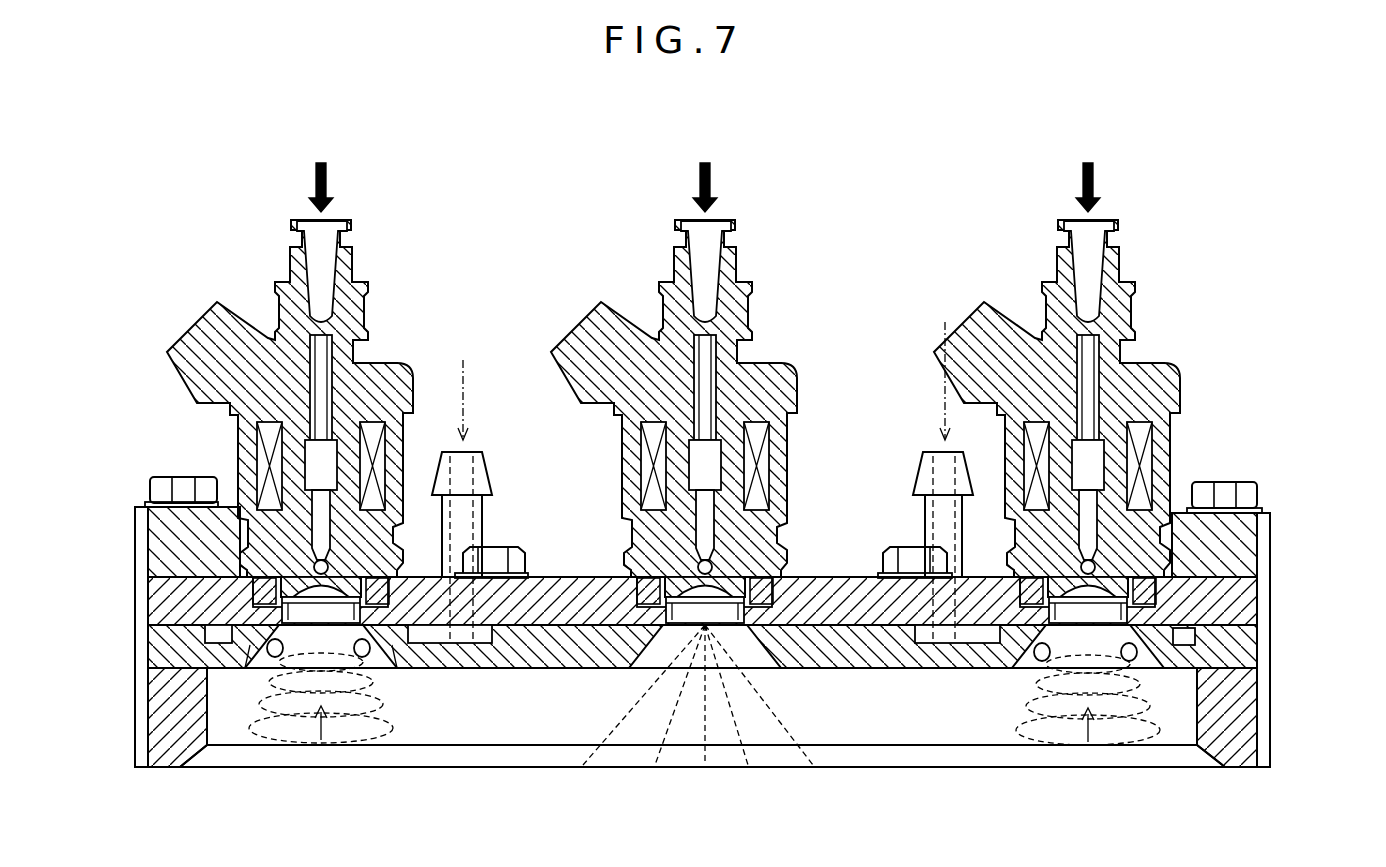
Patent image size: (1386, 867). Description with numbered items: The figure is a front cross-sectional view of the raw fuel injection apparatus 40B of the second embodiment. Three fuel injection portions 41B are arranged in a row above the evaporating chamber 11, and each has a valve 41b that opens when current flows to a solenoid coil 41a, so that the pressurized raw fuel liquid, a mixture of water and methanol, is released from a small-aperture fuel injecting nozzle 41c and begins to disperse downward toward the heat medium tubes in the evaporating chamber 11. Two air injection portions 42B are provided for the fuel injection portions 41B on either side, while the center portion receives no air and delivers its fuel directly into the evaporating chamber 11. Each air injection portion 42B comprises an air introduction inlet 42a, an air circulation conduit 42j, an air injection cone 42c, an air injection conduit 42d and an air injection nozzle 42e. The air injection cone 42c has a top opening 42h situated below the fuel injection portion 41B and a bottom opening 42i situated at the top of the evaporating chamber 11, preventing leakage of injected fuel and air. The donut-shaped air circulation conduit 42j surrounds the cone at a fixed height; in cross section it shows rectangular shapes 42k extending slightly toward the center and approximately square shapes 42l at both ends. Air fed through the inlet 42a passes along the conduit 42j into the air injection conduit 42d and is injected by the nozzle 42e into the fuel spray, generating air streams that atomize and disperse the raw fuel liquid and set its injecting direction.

The raw fuel injection apparatus 40B is at (800, 183).
The fuel injection portion 41B is at (711, 393).
The solenoid coil 41a is at (256, 465).
The valve 41b is at (316, 565).
The fuel injecting nozzle 41c is at (292, 598).
The air introduction inlet 42a is at (480, 482).
The air injection portion 42B is at (318, 742).
The air injection cone 42c is at (212, 723).
The air injection conduit 42d is at (207, 635).
The air injection nozzle 42e is at (268, 652).
The top opening 42h is at (392, 598).
The bottom opening 42i is at (450, 650).
The air circulation conduit 42j is at (497, 572).
The rectangular shape 42k is at (490, 633).
The square shape 42l is at (1215, 626).
The evaporating chamber 11 is at (175, 740).